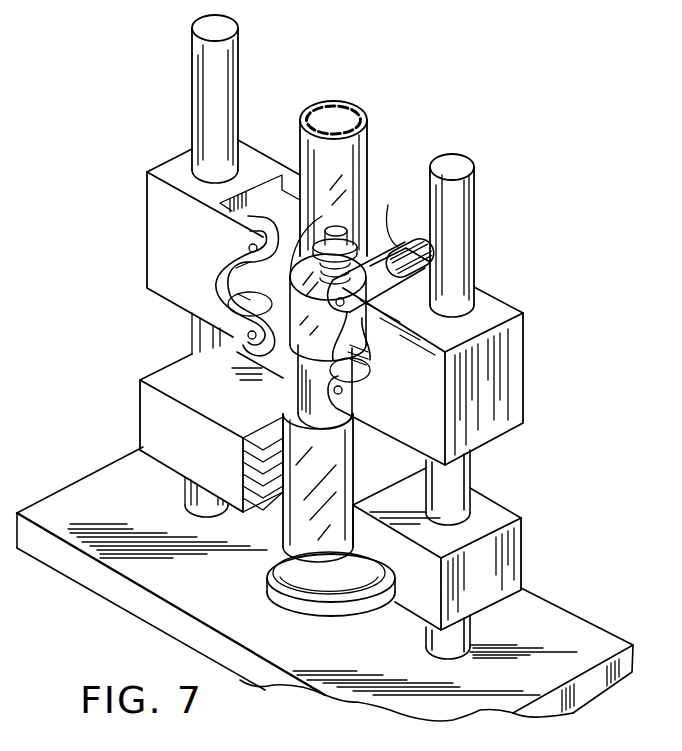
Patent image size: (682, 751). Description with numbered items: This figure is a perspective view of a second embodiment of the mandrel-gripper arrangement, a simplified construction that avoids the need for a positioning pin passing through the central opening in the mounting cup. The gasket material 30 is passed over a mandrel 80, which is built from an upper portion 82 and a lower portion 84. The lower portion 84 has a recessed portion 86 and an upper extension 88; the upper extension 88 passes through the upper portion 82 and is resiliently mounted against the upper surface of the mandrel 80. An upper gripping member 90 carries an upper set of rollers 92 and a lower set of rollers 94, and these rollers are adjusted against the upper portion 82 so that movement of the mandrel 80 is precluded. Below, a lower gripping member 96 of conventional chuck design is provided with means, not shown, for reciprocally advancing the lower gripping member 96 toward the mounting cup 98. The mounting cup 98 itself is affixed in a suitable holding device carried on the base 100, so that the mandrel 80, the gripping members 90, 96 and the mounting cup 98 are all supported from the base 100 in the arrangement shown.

The gasket material 30 is at (366, 158).
The mandrel 80 is at (297, 311).
The upper portion 82 is at (337, 337).
The lower portion 84 is at (298, 518).
The recessed portion 86 is at (303, 386).
The upper extension 88 is at (320, 233).
The upper gripping member 90 is at (158, 235).
The upper set of rollers 92 is at (289, 222).
The lower set of rollers 94 is at (250, 300).
The lower gripping member 96 is at (508, 556).
The mounting cup 98 is at (273, 583).
The base 100 is at (608, 643).